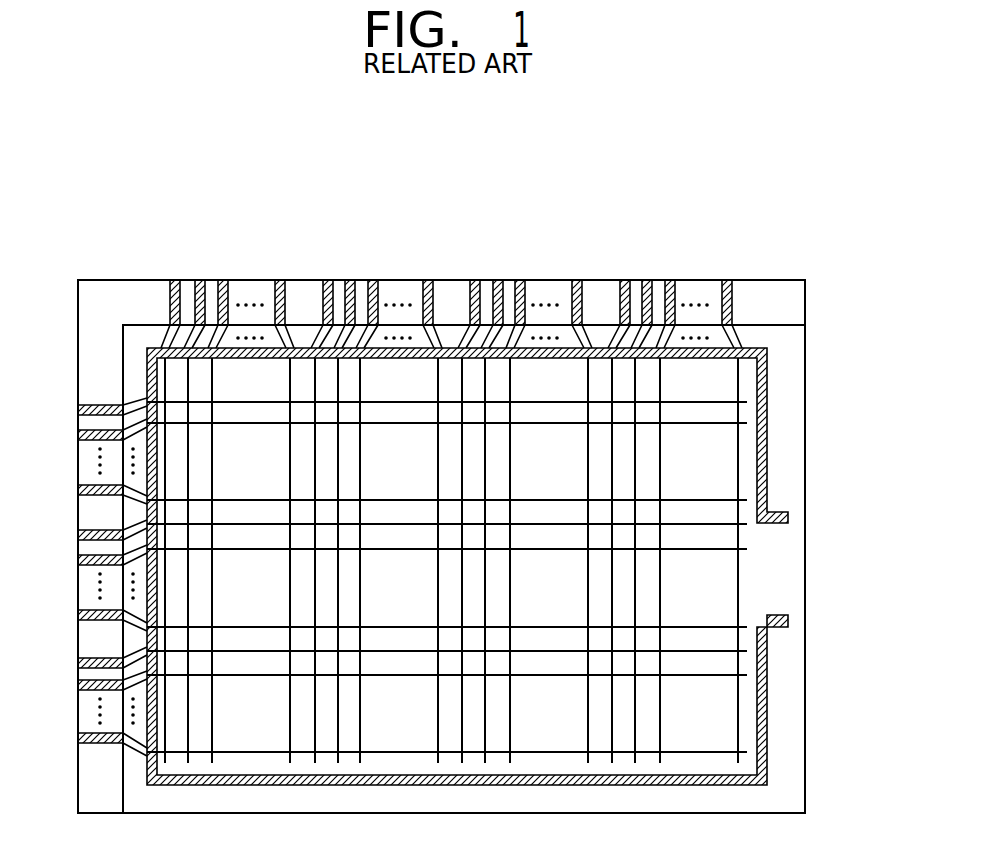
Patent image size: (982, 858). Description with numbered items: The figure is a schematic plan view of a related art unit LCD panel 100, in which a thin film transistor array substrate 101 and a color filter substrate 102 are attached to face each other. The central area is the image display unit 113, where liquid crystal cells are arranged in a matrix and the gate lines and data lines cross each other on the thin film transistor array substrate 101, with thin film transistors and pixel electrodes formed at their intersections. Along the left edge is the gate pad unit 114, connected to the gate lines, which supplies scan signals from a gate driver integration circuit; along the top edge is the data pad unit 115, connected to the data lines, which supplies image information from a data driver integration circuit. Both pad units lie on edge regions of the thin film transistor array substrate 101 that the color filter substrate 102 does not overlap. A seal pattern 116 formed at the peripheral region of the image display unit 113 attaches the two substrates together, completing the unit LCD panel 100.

The LCD panel 100 is at (107, 266).
The thin film transistor array substrate 101 is at (795, 309).
The color filter substrate 102 is at (795, 370).
The image display unit 113 is at (418, 475).
The gate pad unit 114 is at (75, 748).
The data pad unit 115 is at (740, 268).
The seal pattern 116 is at (765, 435).